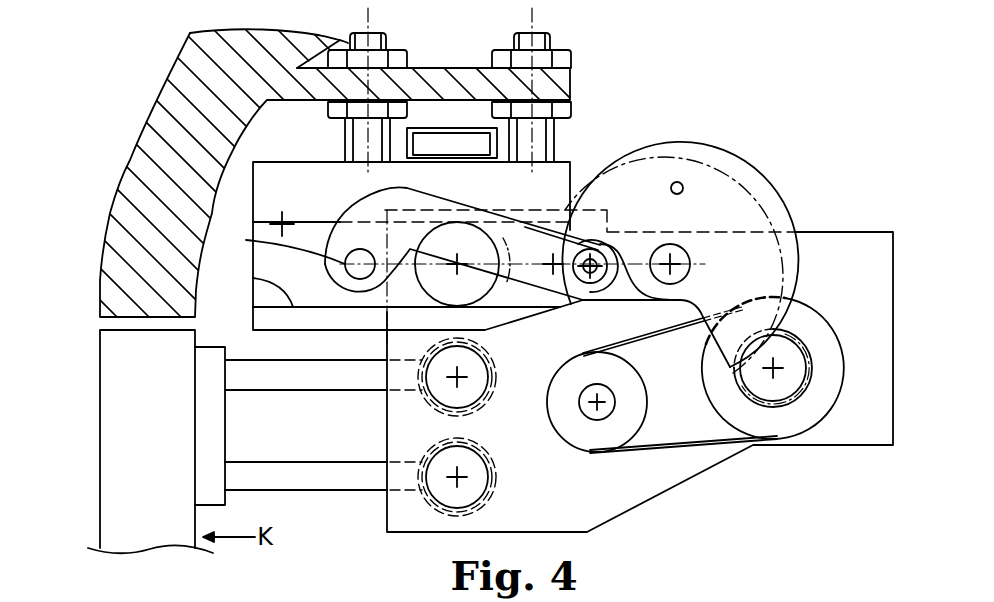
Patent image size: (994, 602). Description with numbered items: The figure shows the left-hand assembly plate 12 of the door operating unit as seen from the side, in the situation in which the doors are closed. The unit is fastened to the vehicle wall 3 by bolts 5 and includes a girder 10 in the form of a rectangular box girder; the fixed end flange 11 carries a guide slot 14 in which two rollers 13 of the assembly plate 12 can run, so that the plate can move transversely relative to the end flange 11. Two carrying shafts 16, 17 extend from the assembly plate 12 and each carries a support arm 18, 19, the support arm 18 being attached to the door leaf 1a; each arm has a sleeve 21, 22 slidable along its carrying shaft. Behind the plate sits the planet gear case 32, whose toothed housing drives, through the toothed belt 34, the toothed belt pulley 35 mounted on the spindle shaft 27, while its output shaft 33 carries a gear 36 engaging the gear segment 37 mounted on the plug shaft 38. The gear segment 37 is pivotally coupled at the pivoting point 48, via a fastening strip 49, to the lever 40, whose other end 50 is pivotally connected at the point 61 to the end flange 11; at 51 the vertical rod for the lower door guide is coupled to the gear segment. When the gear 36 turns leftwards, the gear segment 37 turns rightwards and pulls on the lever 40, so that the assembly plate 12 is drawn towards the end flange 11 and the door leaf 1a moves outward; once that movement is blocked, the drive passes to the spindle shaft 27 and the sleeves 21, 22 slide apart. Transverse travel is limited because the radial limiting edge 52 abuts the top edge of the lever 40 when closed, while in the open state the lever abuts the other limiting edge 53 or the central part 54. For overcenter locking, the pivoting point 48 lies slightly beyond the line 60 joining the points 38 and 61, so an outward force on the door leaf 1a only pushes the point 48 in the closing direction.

The vehicle wall 3 is at (163, 92).
The bolts 5 is at (384, 40).
The girder 10 is at (436, 128).
The end flange 11 is at (566, 166).
The assembly plate 12 is at (851, 232).
The door leaf 1a is at (135, 452).
The support arm 18 is at (309, 383).
The support arm 19 is at (312, 492).
The carrying shaft 17 is at (486, 358).
The sleeve 21 is at (500, 376).
The carrying shaft 16 is at (486, 460).
The sleeve 22 is at (500, 482).
The guide slot 14 is at (253, 279).
The lever 40 is at (457, 198).
The end of the lever 50 is at (347, 283).
The pivoting point 61 is at (281, 245).
The rollers 13 is at (482, 286).
The line 60 is at (507, 251).
The pivoting point 48 is at (593, 290).
The fastening strip 49 is at (616, 290).
The central part 54 is at (645, 299).
The plug shaft 38 is at (690, 257).
The limiting edge 52 is at (582, 222).
The coupling place 51 is at (683, 184).
The gear segment 37 is at (768, 211).
The toothed belt pulley 35 is at (611, 433).
The spindle shaft 27 is at (588, 415).
The toothed belt 34 is at (693, 444).
The planet gear case 32 is at (828, 390).
The limiting edge 53 is at (703, 320).
The output shaft 33 is at (792, 381).
The gear 36 is at (773, 412).